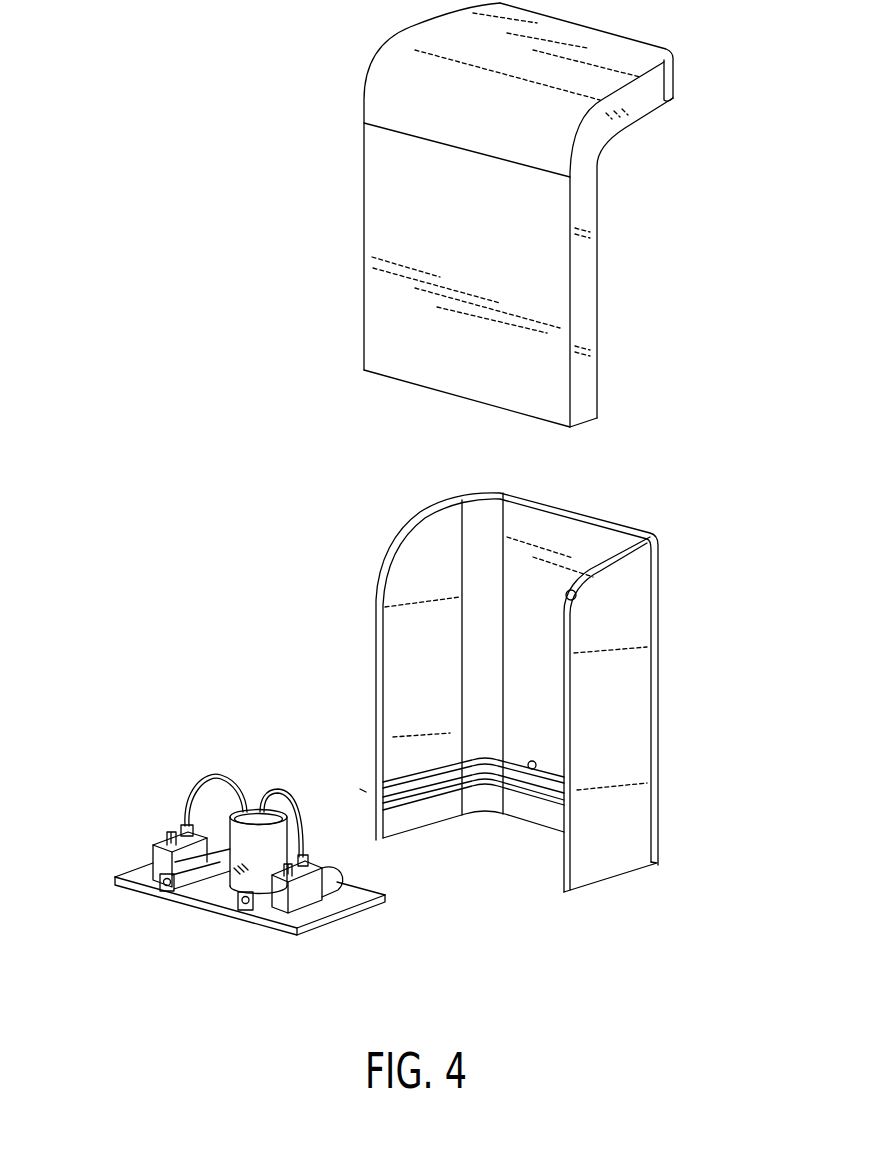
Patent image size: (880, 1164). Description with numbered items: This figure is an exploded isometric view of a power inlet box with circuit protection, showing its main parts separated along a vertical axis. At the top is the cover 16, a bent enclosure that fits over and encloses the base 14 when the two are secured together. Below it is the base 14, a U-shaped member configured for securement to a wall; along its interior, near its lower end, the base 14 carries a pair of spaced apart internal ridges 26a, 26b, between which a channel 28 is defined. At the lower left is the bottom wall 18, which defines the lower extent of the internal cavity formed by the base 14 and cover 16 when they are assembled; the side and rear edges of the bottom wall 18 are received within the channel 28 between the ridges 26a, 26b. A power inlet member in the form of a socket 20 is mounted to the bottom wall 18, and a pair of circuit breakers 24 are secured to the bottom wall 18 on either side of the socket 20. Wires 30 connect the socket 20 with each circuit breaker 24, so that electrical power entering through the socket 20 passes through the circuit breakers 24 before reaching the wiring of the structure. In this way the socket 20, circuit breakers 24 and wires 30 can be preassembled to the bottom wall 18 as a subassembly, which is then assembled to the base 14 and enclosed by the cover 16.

The base 14 is at (659, 610).
The cover 16 is at (363, 182).
The bottom wall 18 is at (363, 914).
The socket 20 is at (232, 882).
The circuit breakers 24 is at (157, 842).
The internal ridge 26a is at (420, 776).
The internal ridge 26b is at (447, 790).
The channel 28 is at (365, 791).
The wires 30 is at (197, 770).